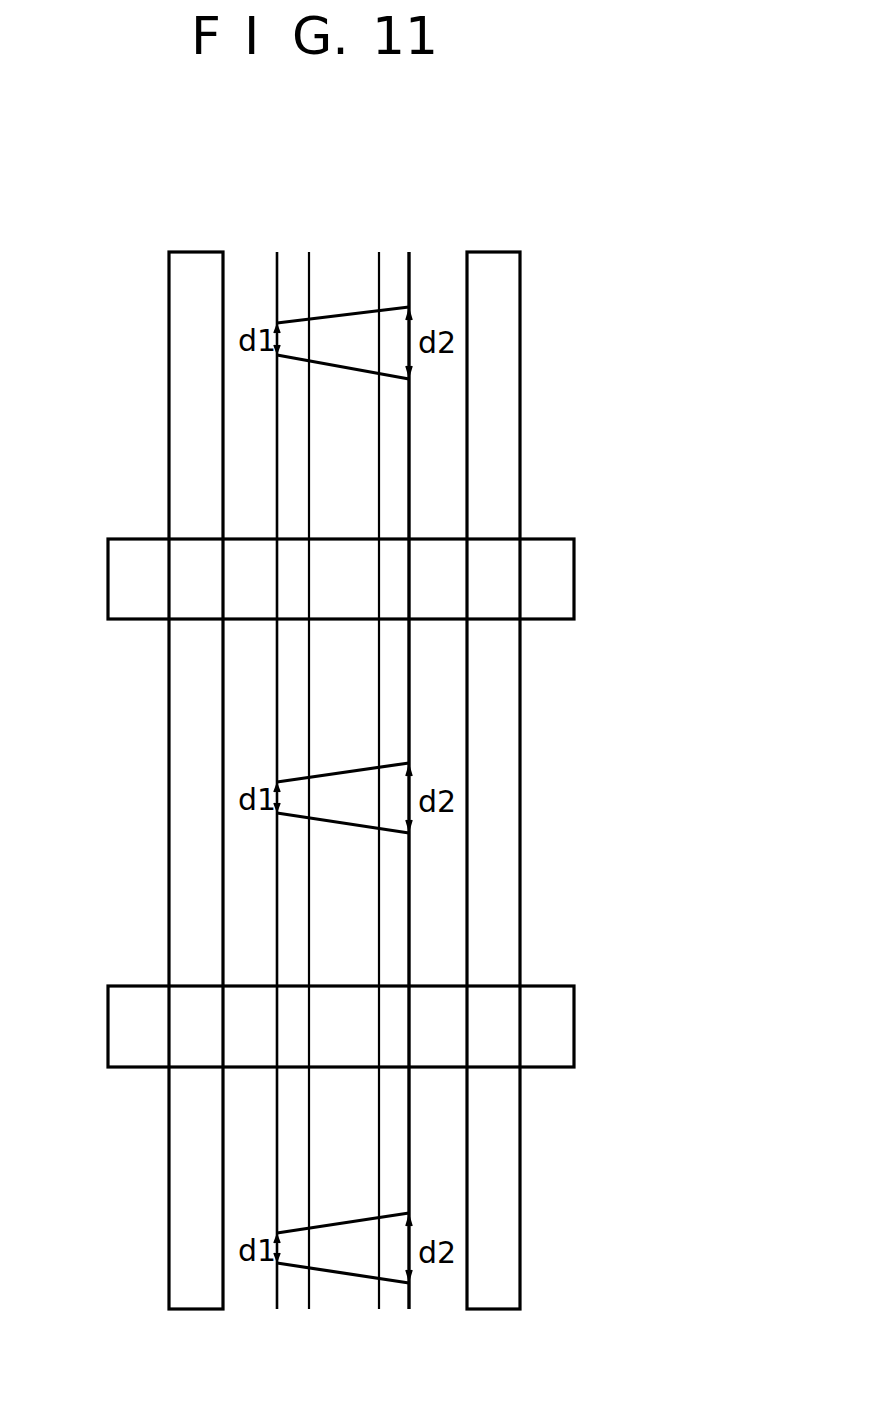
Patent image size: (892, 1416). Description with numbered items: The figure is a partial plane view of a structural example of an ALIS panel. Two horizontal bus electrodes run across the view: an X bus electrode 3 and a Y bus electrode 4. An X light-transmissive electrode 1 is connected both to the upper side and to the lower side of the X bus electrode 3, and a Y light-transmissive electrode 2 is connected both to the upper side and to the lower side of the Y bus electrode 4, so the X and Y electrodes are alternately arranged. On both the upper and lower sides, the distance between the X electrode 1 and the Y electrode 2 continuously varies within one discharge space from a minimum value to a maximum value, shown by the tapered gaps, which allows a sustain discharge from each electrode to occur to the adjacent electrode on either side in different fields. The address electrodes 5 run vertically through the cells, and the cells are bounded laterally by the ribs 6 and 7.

The X light-transmissive electrode 1 is at (292, 398).
The Y light-transmissive electrode 2 is at (292, 278).
The X bus electrode 3 is at (116, 584).
The Y bus electrode 4 is at (116, 1032).
The address electrode 5 is at (341, 325).
The rib 6 is at (182, 268).
The rib 7 is at (493, 266).